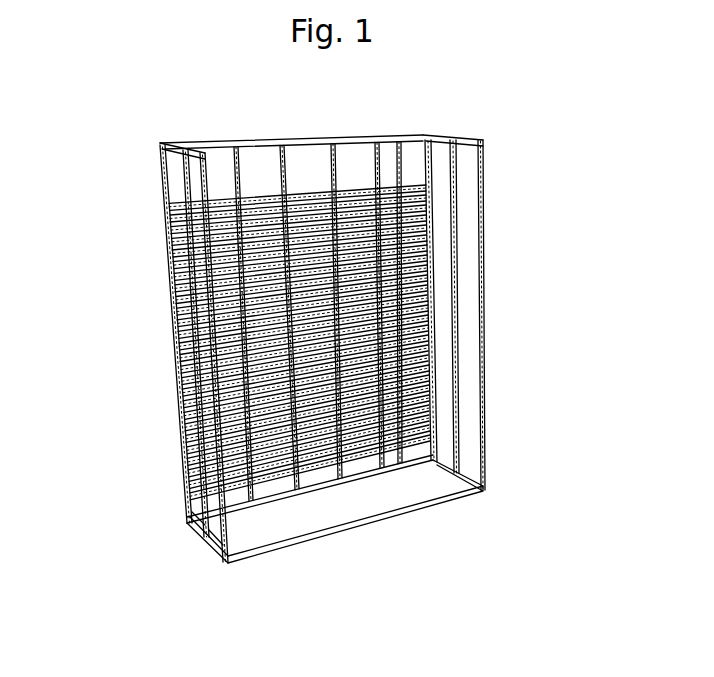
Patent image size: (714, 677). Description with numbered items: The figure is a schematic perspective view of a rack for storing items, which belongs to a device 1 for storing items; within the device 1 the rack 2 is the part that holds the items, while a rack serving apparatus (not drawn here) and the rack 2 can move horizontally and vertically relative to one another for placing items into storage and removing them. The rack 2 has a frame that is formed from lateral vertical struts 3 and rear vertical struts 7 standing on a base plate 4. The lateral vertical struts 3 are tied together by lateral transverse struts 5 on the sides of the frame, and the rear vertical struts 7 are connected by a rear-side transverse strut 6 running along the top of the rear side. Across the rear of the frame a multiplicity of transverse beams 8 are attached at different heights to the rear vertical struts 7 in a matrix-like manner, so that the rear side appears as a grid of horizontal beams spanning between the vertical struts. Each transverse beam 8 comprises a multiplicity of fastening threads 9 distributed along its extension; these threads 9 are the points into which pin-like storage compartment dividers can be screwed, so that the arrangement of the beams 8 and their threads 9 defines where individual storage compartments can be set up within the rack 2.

The device for storing items 1 is at (185, 84).
The rack 2 is at (420, 119).
The lateral vertical struts 3 is at (187, 512).
The base plate 4 is at (277, 527).
The lateral transverse struts 5 is at (168, 146).
The rear-side transverse strut 6 is at (350, 132).
The rear vertical struts 7 is at (398, 160).
The transverse beams 8 is at (420, 230).
The fastening threads 9 is at (360, 453).